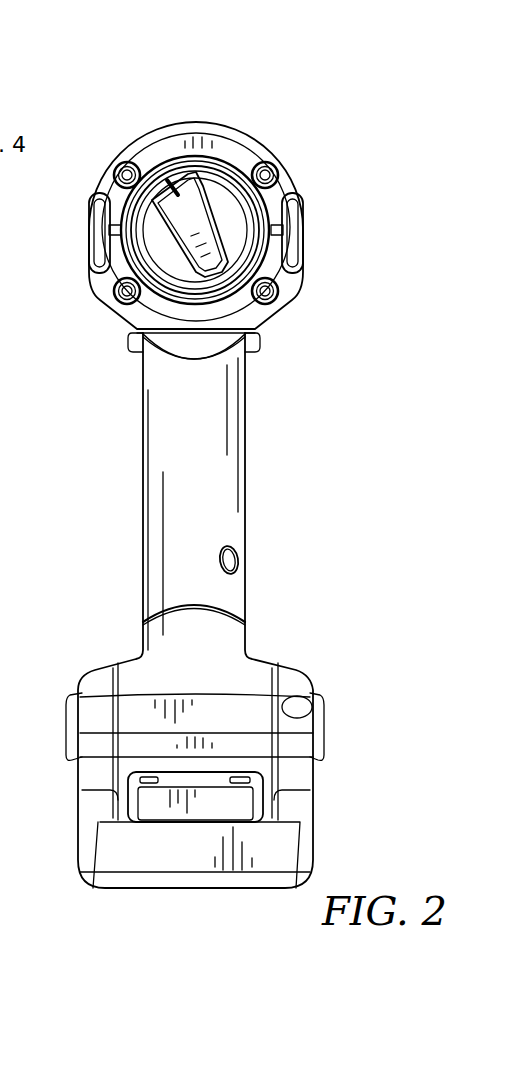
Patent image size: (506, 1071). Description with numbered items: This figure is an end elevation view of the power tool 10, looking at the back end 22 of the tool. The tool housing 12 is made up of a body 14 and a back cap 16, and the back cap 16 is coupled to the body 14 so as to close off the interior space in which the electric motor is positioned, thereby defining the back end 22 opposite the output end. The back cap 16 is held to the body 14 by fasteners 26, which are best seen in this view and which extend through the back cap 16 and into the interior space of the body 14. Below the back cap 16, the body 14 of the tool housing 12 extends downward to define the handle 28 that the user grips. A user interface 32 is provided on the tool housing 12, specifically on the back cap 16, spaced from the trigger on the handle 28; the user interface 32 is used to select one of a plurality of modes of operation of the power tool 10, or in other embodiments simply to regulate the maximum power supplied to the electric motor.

The power tool 10 is at (331, 100).
The tool housing 12 is at (259, 411).
The body 14 is at (233, 527).
The back cap 16 is at (181, 150).
The back end 22 is at (236, 148).
The fasteners 26 is at (100, 300).
The handle 28 is at (158, 515).
The user interface 32 is at (164, 258).